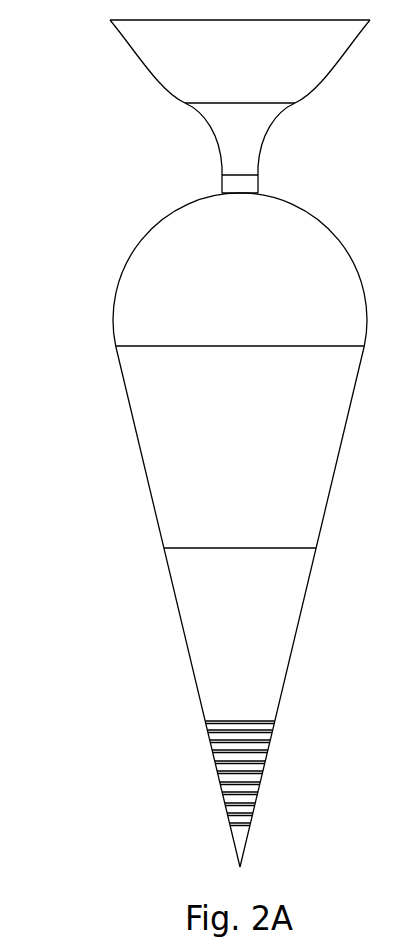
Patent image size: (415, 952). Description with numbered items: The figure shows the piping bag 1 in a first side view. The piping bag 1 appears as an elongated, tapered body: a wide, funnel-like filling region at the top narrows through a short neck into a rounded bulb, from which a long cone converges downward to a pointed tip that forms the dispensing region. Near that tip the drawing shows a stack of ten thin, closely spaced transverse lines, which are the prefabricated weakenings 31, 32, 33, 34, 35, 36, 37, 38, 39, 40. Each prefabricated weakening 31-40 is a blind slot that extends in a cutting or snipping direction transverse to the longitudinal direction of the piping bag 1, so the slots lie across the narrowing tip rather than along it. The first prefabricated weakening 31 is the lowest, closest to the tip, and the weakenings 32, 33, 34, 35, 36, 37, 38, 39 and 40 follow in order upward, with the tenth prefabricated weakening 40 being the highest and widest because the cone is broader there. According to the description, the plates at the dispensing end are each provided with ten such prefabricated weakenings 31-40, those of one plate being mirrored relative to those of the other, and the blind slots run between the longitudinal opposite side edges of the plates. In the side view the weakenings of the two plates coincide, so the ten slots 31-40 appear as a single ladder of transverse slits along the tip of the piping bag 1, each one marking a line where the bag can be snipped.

The piping bag 1 is at (93, 175).
The first prefabricated weakening 31 is at (246, 824).
The prefabricated weakening 32 is at (231, 814).
The prefabricated weakening 33 is at (251, 804).
The prefabricated weakening 34 is at (226, 793).
The second prefabricated weakening 35 is at (257, 783).
The prefabricated weakening 36 is at (224, 772).
The prefabricated weakening 37 is at (262, 762).
The prefabricated weakening 38 is at (217, 751).
The prefabricated weakening 39 is at (268, 741).
The prefabricated weakening 40 is at (212, 730).